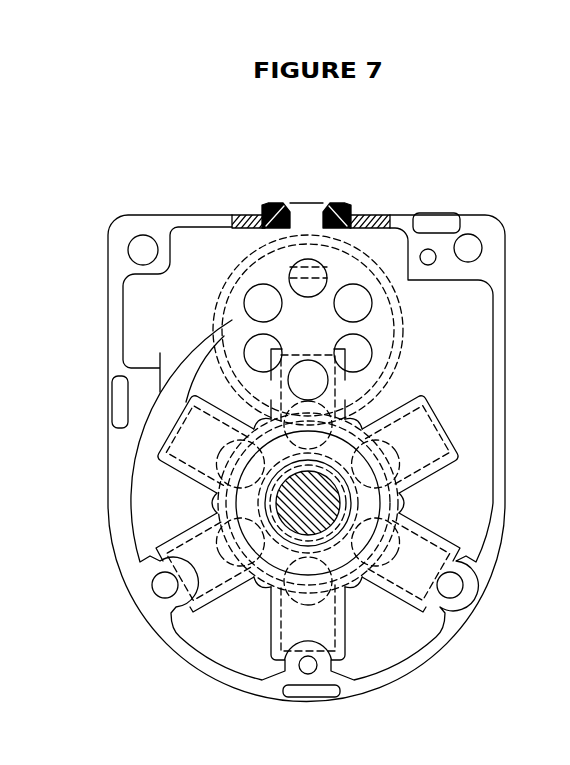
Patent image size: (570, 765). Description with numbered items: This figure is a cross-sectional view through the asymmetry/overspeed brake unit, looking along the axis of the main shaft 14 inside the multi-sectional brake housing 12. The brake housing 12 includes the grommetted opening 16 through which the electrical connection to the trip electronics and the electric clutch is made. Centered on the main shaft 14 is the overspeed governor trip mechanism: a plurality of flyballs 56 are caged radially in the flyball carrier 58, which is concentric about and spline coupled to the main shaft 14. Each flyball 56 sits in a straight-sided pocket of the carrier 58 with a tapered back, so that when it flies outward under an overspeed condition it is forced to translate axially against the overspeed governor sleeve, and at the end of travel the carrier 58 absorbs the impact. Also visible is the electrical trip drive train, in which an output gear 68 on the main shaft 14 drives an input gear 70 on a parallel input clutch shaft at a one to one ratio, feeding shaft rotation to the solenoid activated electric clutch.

The brake housing 12 is at (121, 270).
The main shaft 14 is at (323, 517).
The grommetted opening 16 is at (307, 217).
The flyballs 56 is at (198, 543).
The flyball carrier 58 is at (423, 394).
The output gear 68 is at (257, 583).
The input gear 70 is at (394, 328).